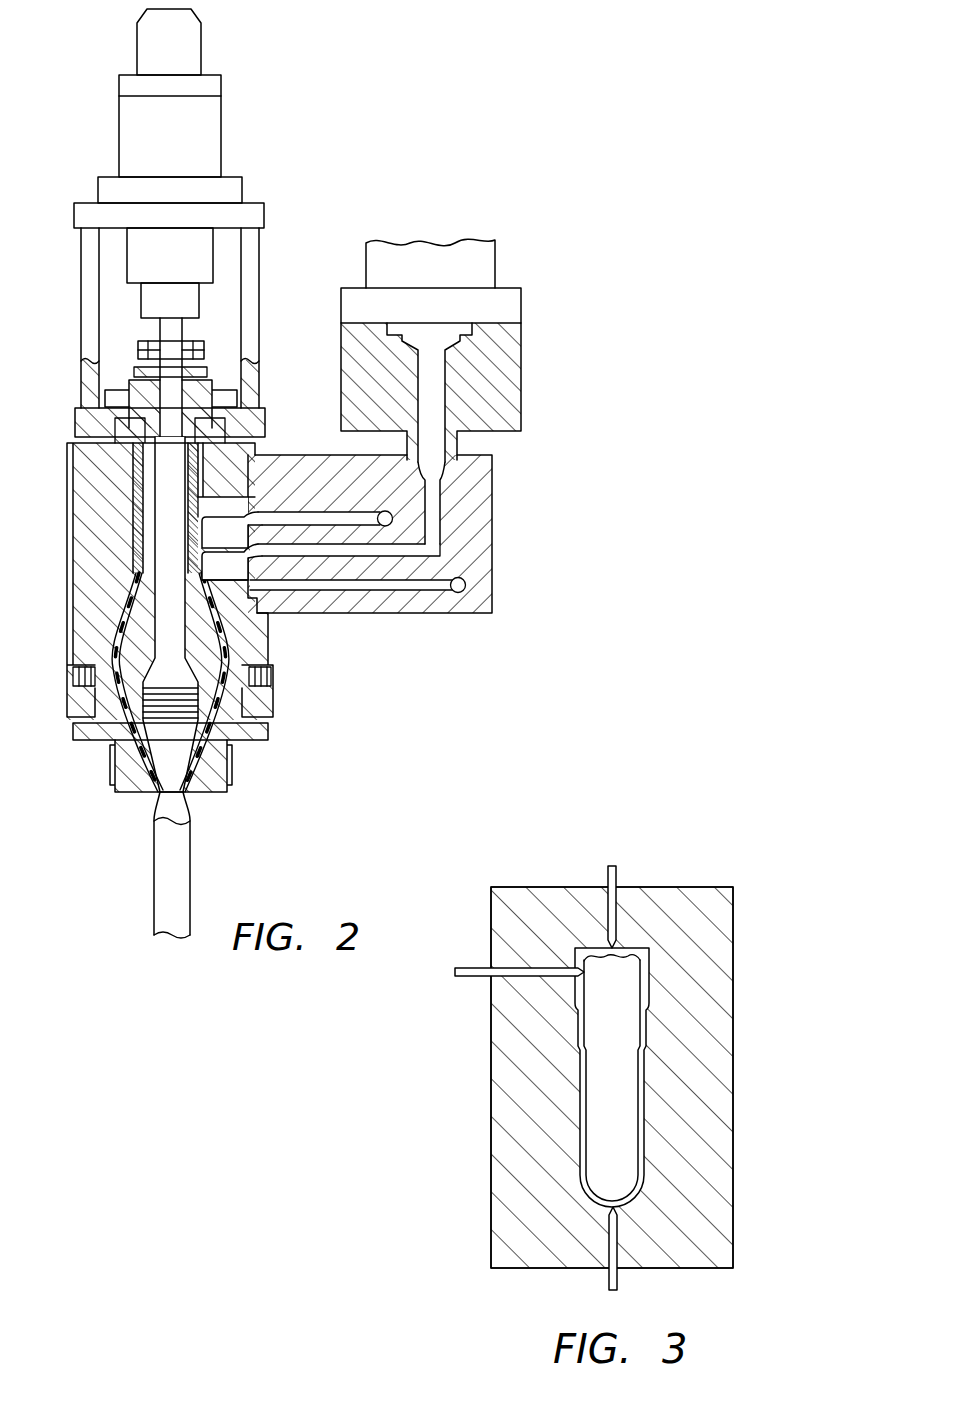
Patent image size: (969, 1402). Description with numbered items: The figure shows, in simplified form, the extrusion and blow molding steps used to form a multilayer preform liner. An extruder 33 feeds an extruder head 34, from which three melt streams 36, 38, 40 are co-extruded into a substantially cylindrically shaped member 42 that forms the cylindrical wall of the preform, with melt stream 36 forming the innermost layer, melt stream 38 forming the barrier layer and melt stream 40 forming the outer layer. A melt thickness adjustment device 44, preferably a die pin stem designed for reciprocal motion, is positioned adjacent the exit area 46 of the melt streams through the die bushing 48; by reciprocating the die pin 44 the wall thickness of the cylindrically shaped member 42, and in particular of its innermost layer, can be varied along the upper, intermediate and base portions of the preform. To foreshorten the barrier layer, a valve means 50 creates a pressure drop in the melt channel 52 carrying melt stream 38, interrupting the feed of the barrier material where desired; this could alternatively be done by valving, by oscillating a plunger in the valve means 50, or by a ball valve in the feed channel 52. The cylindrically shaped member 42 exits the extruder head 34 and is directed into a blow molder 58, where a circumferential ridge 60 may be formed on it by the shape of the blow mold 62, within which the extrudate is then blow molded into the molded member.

In FIG. 2, the extruder 33 is at (240, 100).
In FIG. 2, the extruder head 34 is at (256, 258).
In FIG. 2, the melt stream 36 is at (248, 517).
In FIG. 2, the melt stream 38 is at (248, 552).
In FIG. 2, the melt stream 40 is at (237, 583).
In FIG. 2, the cylindrically shaped member 42 is at (181, 858).
In FIG. 2, the melt thickness adjustment device 44 is at (168, 528).
In FIG. 2, the exit area 46 is at (128, 817).
In FIG. 2, the die bushing 48 is at (218, 767).
In FIG. 2, the valve means 50 is at (522, 350).
In FIG. 2, the melt channel 52 is at (434, 548).
In FIG. 3, the blow molder 58 is at (470, 1101).
In FIG. 3, the circumferential ridge 60 is at (653, 998).
In FIG. 3, the blow mold 62 is at (717, 905).